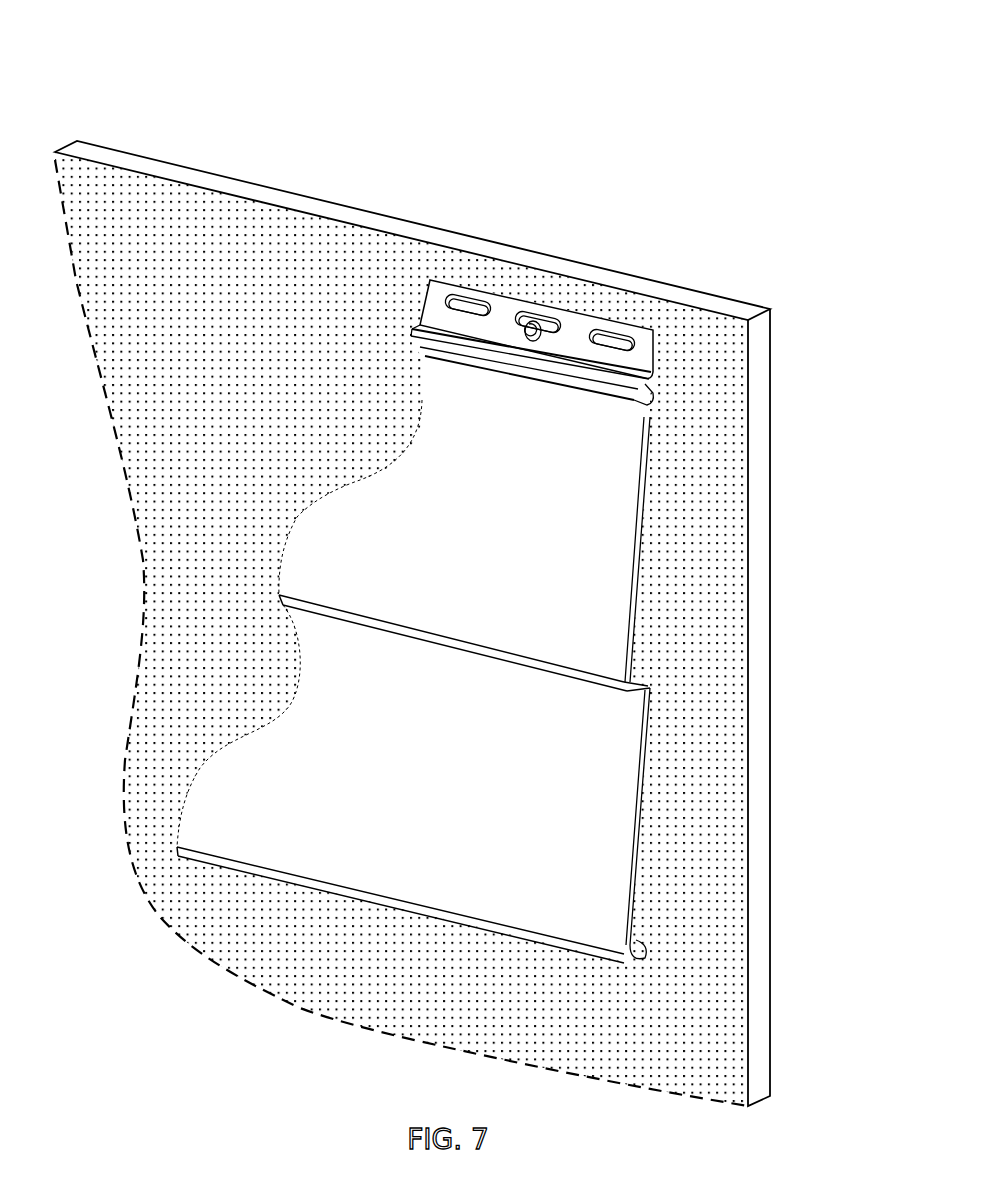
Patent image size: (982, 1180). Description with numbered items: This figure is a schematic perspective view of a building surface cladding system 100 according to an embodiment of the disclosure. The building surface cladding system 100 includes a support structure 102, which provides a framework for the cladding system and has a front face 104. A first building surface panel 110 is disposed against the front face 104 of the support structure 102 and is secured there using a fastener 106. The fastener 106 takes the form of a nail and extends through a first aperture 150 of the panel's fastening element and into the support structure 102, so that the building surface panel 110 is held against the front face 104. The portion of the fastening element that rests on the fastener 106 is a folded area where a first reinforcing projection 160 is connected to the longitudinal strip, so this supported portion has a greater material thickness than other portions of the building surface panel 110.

The building surface cladding system 100 is at (438, 565).
The support structure 102 is at (236, 372).
The front face 104 is at (337, 247).
The fastener 106 is at (532, 331).
The first building surface panel 110 is at (668, 525).
The first aperture 150 is at (571, 346).
The first reinforcing projection 160 is at (544, 322).